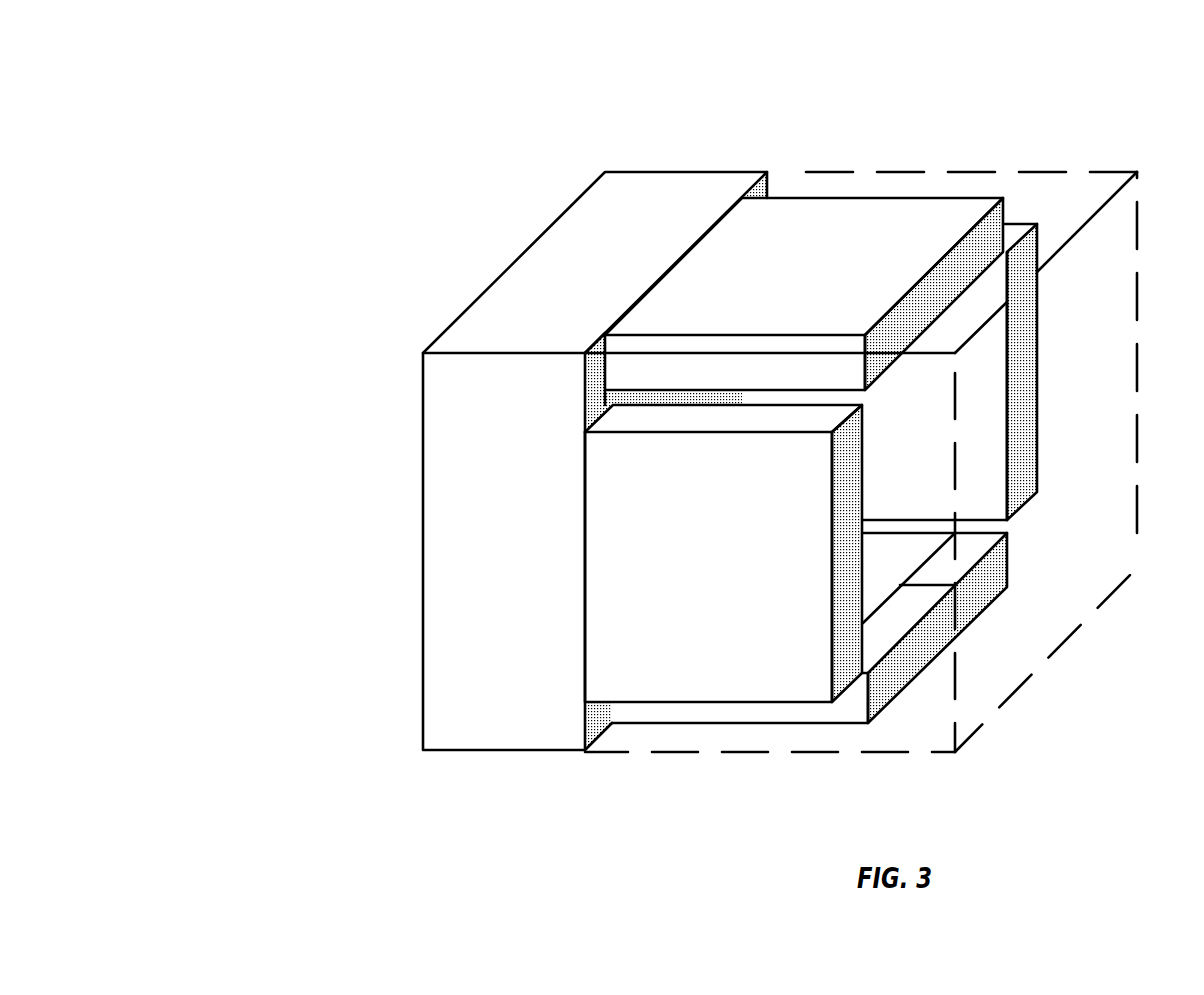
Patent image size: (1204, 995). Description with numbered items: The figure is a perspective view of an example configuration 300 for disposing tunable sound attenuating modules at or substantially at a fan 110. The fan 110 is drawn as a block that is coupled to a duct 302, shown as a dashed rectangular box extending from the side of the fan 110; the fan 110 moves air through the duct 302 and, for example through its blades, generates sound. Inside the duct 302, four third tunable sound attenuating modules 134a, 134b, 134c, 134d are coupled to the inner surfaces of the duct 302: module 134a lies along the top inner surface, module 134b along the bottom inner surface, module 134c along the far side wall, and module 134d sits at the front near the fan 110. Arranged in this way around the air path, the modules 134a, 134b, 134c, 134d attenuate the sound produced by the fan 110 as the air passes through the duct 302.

The configuration 300 is at (297, 77).
The fan 110 is at (603, 172).
The duct 302 is at (1128, 172).
The third tunable sound attenuating module 134a is at (833, 198).
The third tunable sound attenuating module 134b is at (940, 660).
The third tunable sound attenuating module 134c is at (1030, 222).
The third tunable sound attenuating module 134d is at (698, 702).